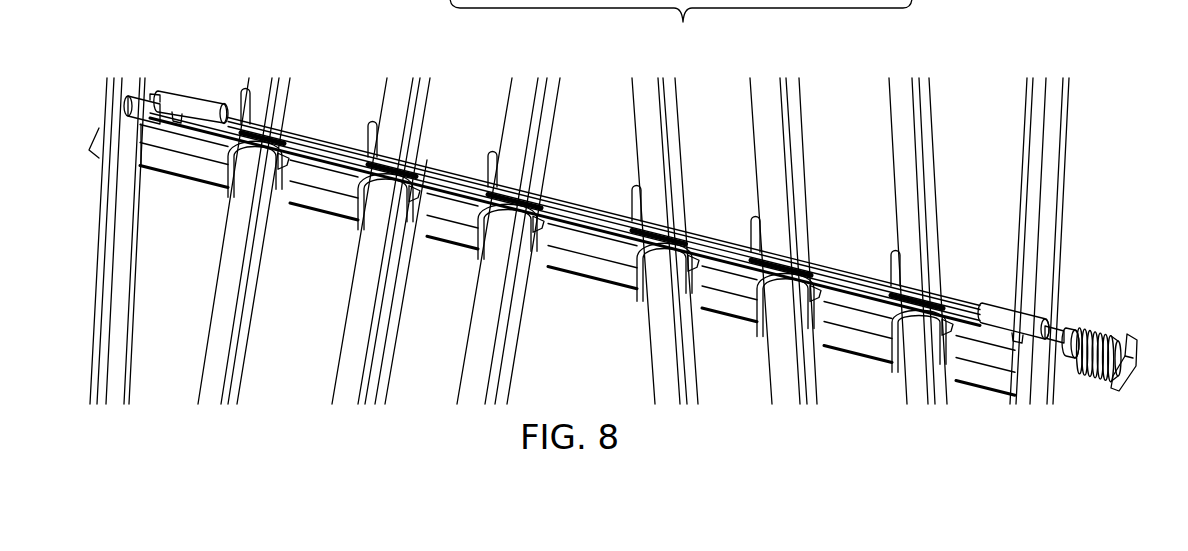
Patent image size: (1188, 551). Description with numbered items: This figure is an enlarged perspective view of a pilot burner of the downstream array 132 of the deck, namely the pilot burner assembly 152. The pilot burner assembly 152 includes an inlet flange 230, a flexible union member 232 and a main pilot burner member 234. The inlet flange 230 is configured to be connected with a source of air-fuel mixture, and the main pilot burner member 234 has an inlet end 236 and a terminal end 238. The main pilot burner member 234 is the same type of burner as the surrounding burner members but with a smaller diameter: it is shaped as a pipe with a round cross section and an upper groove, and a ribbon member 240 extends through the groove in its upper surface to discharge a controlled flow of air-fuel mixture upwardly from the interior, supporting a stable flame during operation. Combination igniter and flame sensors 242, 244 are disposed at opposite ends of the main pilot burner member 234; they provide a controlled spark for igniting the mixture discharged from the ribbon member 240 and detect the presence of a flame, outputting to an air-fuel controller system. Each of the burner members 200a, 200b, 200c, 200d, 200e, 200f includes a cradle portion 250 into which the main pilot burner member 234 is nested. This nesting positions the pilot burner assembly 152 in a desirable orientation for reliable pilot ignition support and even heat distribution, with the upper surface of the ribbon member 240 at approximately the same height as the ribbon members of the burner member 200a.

The downstream array 132 is at (681, 26).
The pilot burner assembly 152 is at (1122, 283).
The burner member 200a is at (688, 107).
The burner member 200b is at (813, 107).
The burner member 200c is at (940, 107).
The burner member 200d is at (283, 75).
The burner member 200e is at (425, 75).
The burner member 200f is at (550, 75).
The inlet flange 230 is at (1113, 400).
The flexible union member 232 is at (1088, 390).
The main pilot burner member 234 is at (588, 197).
The inlet end 236 is at (1070, 320).
The terminal end 238 is at (134, 89).
The ribbon member 240 is at (457, 182).
The combination igniter and flame sensor 242 is at (1000, 295).
The combination igniter and flame sensor 244 is at (205, 93).
The cradle portion 250 is at (637, 260).